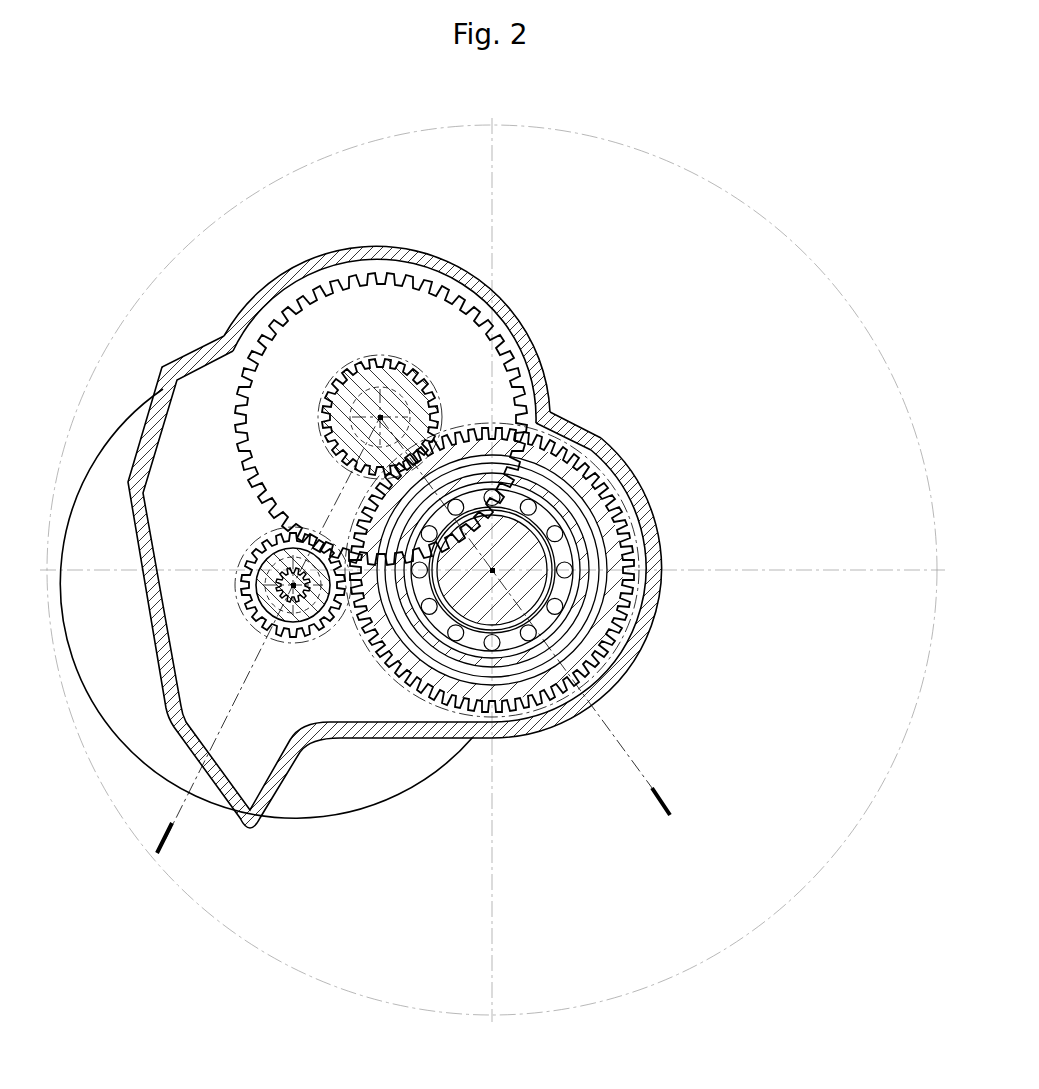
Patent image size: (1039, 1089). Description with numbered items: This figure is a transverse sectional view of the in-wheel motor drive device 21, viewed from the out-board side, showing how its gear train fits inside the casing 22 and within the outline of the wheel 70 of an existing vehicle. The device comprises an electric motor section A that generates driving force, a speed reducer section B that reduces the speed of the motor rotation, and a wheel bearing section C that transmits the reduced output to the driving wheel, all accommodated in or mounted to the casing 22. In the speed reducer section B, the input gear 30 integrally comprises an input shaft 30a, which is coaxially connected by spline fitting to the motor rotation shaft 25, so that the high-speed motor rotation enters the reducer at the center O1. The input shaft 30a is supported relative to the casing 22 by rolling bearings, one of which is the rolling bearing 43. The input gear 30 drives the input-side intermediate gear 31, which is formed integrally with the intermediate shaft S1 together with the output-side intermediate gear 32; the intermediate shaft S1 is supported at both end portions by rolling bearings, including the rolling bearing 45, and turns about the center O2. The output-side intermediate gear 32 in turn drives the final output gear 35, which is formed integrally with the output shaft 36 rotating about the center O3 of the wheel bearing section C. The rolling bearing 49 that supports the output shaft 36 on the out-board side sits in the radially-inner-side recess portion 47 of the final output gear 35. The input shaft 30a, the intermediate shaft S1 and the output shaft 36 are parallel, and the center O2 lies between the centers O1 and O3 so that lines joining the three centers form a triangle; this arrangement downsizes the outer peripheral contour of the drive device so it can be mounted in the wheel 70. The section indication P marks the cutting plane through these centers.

The wheel 70 is at (708, 178).
The in-wheel motor drive device 21 is at (538, 272).
The casing 22 is at (544, 327).
The input-side intermediate gear 31 is at (355, 300).
The output-side intermediate gear 32 is at (396, 368).
The final output gear 35 is at (585, 446).
The output shaft 36 is at (528, 700).
The input gear 30 is at (248, 555).
The input shaft 30a is at (270, 615).
The motor rotation shaft 25 is at (310, 641).
The rolling bearing 43 is at (236, 606).
The rolling bearing 45 is at (323, 386).
The radially-inner-side recess portion 47 is at (642, 600).
The rolling bearing 49 is at (627, 672).
The center of the input shaft O1 is at (275, 541).
The center of the intermediate shaft O2 is at (375, 420).
The center of the wheel bearing section O3 is at (640, 495).
The intermediate shaft S1 is at (418, 404).
The electric motor section A is at (85, 713).
The speed reducer section B is at (254, 266).
The wheel bearing section C is at (665, 649).
The section line P- P is at (173, 847).